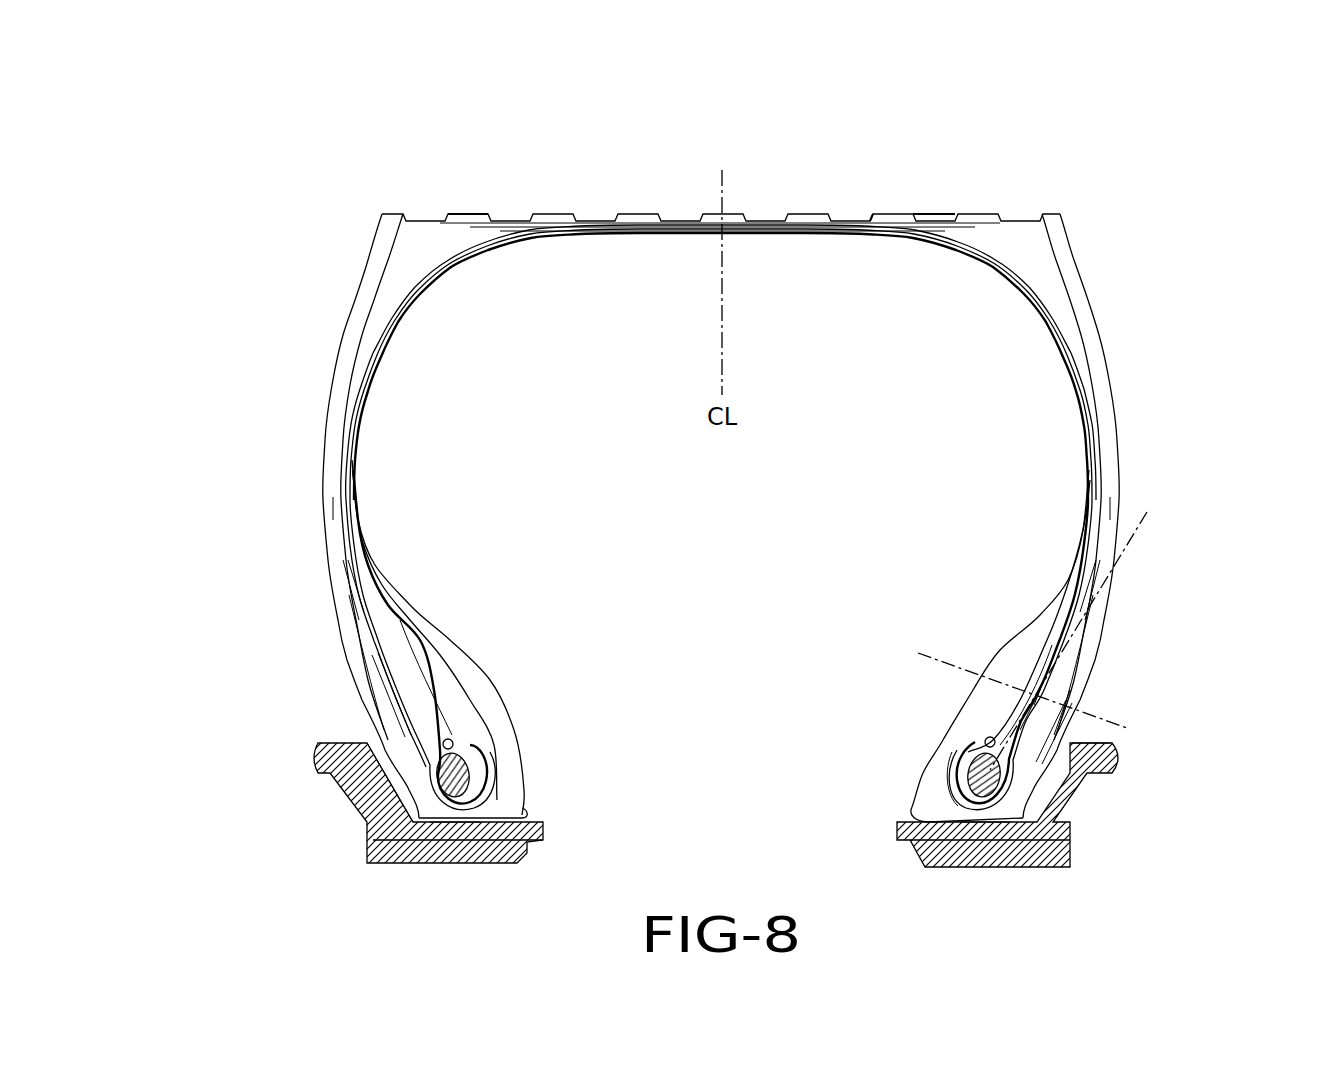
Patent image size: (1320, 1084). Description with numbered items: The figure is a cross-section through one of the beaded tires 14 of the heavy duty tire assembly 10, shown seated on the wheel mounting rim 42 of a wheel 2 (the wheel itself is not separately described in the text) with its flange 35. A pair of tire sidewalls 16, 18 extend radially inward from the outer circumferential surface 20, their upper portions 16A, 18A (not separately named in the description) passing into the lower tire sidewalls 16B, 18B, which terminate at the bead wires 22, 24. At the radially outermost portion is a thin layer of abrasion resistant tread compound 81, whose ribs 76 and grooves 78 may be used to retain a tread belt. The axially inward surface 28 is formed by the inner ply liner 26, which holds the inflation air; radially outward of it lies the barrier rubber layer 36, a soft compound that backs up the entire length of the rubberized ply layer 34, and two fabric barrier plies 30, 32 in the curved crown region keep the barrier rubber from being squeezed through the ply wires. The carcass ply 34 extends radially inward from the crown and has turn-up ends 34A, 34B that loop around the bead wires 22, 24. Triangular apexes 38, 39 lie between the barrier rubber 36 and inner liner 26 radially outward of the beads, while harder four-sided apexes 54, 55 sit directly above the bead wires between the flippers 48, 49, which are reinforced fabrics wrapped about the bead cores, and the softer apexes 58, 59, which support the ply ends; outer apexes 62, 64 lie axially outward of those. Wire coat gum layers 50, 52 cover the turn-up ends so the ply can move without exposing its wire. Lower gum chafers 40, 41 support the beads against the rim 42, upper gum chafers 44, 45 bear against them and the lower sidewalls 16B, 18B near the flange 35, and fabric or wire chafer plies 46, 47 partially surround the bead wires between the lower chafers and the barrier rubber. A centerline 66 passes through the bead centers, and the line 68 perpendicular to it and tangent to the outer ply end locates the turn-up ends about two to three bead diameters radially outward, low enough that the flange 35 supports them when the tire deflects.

The rim 2 is at (435, 835).
The heavy duty tire assembly 10 is at (1133, 448).
The beaded tire 14 is at (1105, 314).
The tire sidewall 16 is at (1105, 386).
The sidewall shoulder portion 16A is at (1078, 264).
The lower tire sidewall 16B is at (1093, 660).
The tire sidewall 18 is at (337, 382).
The sidewall shoulder portion 18A is at (372, 262).
The lower tire sidewall 18B is at (347, 660).
The outer circumferential surface 20 is at (1030, 215).
The bead wire 22 is at (1000, 780).
The bead wire 24 is at (443, 780).
The inner ply liner 26 is at (1082, 513).
The axially inward surface 28 is at (1068, 410).
The fabric barrier ply 30 is at (877, 236).
The fabric barrier ply 32 is at (806, 236).
The rubberized laminated ply layer 34 is at (1008, 270).
The turn-up end 34A is at (1050, 720).
The turn-up end 34B is at (370, 714).
The flange 35 is at (1115, 758).
The barrier rubber layer 36 is at (1098, 463).
The apex 38 is at (1057, 608).
The apex 39 is at (386, 606).
The lower gum chafer 40 is at (940, 812).
The lower gum chafer 41 is at (508, 812).
The wheel mounting rim 42 is at (1040, 866).
The upper gum chafer 44 is at (1052, 770).
The upper gum chafer 45 is at (390, 756).
The chafer ply 46 is at (985, 822).
The chafer ply 47 is at (455, 822).
The flipper 48 is at (985, 745).
The flipper 49 is at (453, 745).
The wire coat gum layer 50 is at (1063, 718).
The wire coat gum layer 52 is at (1030, 700).
The apex 54 is at (1010, 718).
The apex 55 is at (428, 708).
The apex 58 is at (1082, 608).
The apex 59 is at (358, 606).
The outer apex 62 is at (1088, 633).
The outer apex 64 is at (350, 633).
The centerline 66 is at (955, 768).
The line 68 is at (935, 660).
The ribs 76 is at (880, 212).
The grooves 78 is at (940, 212).
The abrasion resistant tread compound 81 is at (472, 212).